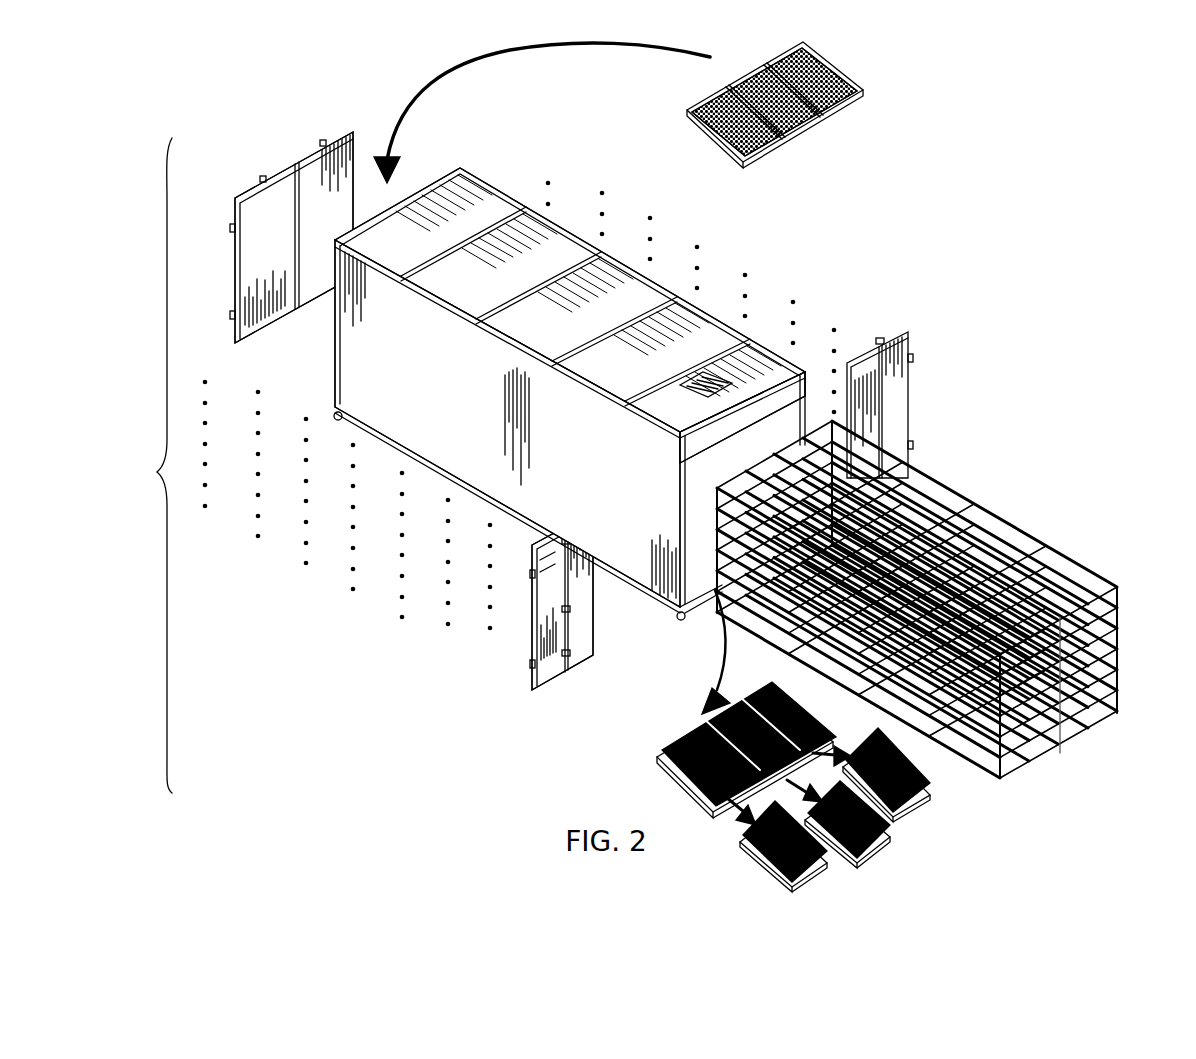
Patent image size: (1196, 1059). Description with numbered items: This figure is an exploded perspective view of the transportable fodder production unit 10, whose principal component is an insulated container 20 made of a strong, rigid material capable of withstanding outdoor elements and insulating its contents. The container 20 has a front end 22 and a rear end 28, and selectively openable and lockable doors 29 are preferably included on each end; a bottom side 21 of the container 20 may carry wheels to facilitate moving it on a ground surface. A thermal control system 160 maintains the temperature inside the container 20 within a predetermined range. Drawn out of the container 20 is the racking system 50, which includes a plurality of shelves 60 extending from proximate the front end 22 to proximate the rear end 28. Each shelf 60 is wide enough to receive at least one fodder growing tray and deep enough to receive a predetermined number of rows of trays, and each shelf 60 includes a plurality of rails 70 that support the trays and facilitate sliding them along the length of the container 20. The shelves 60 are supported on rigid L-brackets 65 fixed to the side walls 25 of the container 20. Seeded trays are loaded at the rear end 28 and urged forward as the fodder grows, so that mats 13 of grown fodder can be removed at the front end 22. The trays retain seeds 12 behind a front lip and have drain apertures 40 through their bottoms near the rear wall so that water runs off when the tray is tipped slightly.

The transportable fodder production unit 10 is at (924, 151).
The seeds 12 is at (775, 112).
The mats of grown fodder 13 is at (926, 797).
The insulated container 20 is at (613, 368).
The bottom side 21 is at (695, 512).
The front end 22 is at (787, 386).
The side walls 25 is at (790, 410).
The rear end 28 is at (413, 192).
The doors 29 is at (262, 180).
The drain apertures 40 is at (752, 430).
The racking system 50 is at (938, 599).
The shelves 60 is at (1120, 590).
The L-brackets 65 is at (603, 192).
The rails 70 is at (1000, 522).
The thermal control system 160 is at (735, 372).